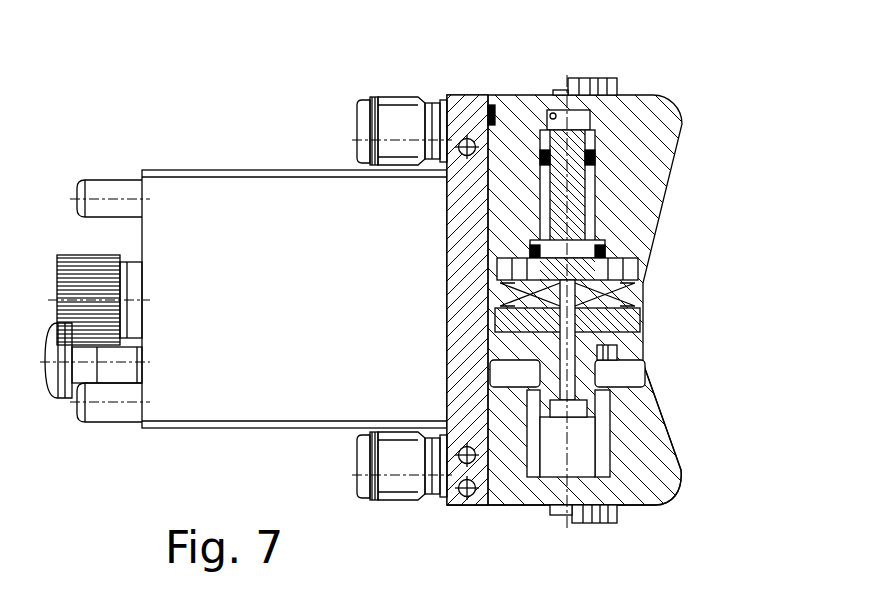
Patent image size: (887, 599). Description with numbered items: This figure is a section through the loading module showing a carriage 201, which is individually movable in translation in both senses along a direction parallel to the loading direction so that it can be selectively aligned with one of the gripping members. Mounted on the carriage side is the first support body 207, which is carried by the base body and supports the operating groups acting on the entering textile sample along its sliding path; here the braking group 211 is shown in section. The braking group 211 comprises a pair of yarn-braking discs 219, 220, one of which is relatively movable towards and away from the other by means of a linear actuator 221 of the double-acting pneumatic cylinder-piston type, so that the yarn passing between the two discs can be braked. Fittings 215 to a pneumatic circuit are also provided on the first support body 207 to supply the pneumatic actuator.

The carriage 201 is at (704, 82).
The first support body 207 is at (468, 95).
The braking group 211 is at (687, 462).
The fittings 215 is at (397, 125).
The yarn-braking disc 219 is at (635, 285).
The yarn-braking disc 220 is at (632, 300).
The linear actuator 221 is at (616, 243).